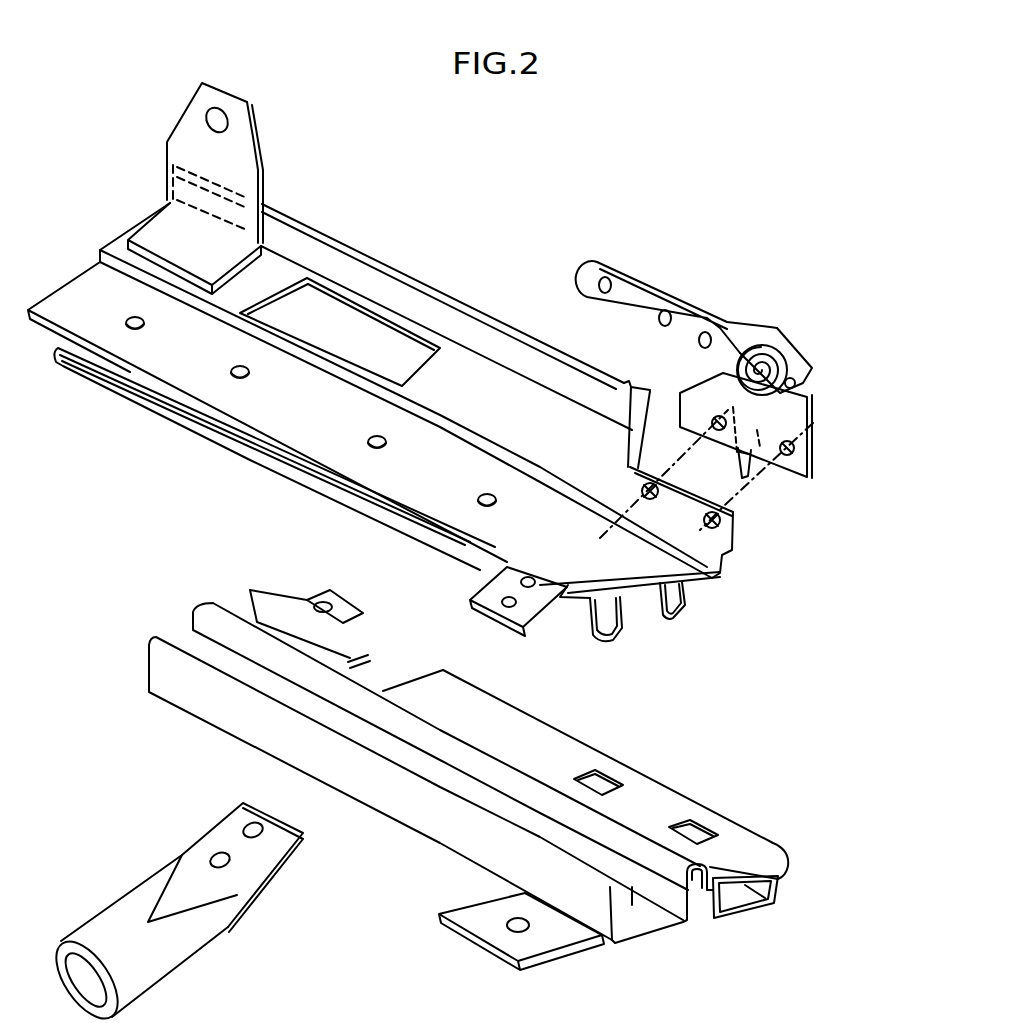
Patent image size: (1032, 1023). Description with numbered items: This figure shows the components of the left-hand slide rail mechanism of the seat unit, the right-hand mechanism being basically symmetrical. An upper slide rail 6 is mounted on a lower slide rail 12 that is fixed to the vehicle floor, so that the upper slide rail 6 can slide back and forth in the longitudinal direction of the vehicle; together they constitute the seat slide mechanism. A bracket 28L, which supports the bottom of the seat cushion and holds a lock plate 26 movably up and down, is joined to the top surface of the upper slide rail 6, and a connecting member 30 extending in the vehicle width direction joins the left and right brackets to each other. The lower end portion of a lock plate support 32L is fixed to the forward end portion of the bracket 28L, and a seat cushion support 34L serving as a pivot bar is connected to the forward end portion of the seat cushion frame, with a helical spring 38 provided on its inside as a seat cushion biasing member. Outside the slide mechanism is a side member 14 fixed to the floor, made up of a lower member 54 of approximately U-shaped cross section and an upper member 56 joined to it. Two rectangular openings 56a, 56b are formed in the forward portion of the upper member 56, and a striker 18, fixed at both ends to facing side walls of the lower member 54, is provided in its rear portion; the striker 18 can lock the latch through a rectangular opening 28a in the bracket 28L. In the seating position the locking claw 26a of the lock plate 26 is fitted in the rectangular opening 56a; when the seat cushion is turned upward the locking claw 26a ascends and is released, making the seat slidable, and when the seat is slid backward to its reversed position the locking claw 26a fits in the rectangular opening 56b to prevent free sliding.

The upper slide rail 6 is at (690, 603).
The lower slide rail 12 is at (680, 938).
The side member 14 is at (533, 788).
The striker 18 is at (348, 660).
The lock plate 26 is at (813, 417).
The locking claw 26a is at (740, 470).
The rectangular opening 28a is at (317, 310).
The bracket 28L is at (492, 371).
The connecting member 30 is at (180, 937).
The lock plate support 32L is at (817, 450).
The seat cushion support 34L is at (633, 262).
The helical spring 38 is at (770, 330).
The lower member 54 is at (777, 887).
The upper member 56 is at (496, 788).
The rectangular opening 56a is at (693, 822).
The rectangular opening 56b is at (600, 777).